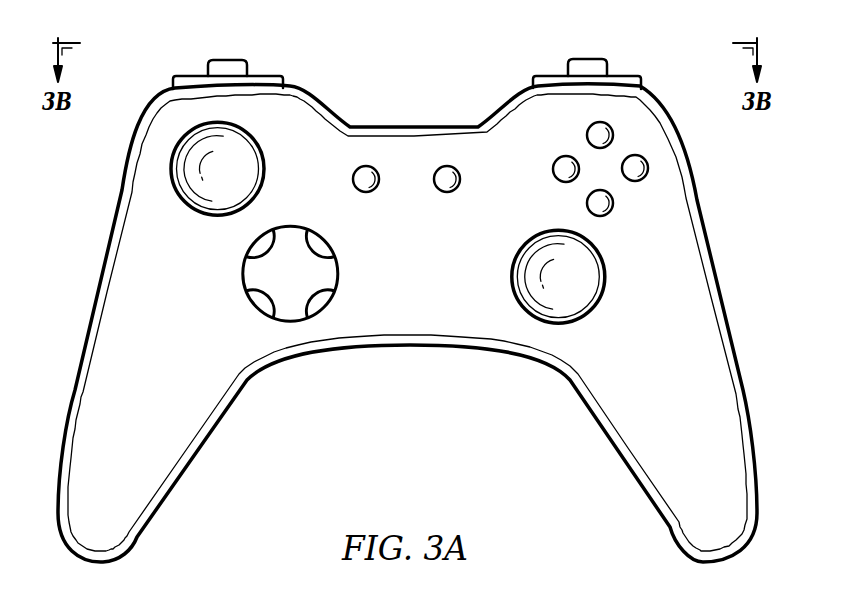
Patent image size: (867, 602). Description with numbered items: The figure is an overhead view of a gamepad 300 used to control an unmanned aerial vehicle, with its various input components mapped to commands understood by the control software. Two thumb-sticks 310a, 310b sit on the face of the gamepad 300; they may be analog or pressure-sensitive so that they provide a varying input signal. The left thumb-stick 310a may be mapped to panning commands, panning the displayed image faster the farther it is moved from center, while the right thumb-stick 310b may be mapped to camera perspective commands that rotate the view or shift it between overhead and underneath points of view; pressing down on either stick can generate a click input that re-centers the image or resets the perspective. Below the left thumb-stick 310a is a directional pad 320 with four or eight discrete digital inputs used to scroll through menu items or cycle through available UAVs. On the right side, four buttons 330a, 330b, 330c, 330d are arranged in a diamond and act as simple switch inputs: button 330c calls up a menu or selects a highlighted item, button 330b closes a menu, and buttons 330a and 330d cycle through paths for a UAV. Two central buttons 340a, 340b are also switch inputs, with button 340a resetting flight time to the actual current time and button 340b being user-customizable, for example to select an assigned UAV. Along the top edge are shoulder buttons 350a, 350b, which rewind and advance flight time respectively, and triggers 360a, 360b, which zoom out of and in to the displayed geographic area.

The gamepad 300 is at (104, 259).
The thumb-stick 310a is at (207, 214).
The thumb-stick 310b is at (605, 286).
The directional pad 320 is at (243, 276).
The button 330a is at (613, 128).
The button 330b is at (648, 167).
The button 330c is at (612, 211).
The button 330d is at (555, 178).
The button 340a is at (353, 174).
The button 340b is at (446, 193).
The shoulder button 350a is at (188, 75).
The shoulder button 350b is at (626, 74).
The trigger 360a is at (227, 60).
The trigger 360b is at (587, 59).